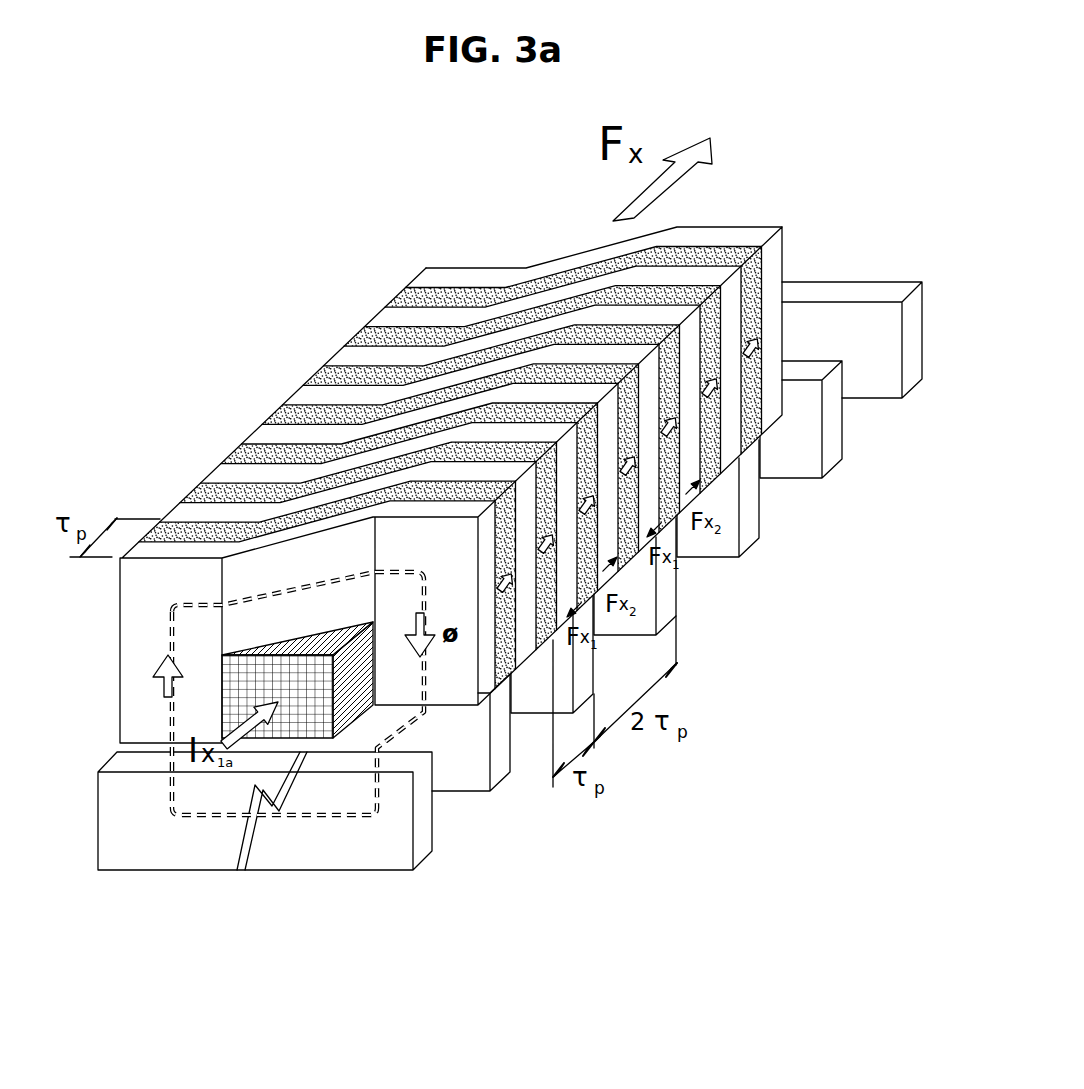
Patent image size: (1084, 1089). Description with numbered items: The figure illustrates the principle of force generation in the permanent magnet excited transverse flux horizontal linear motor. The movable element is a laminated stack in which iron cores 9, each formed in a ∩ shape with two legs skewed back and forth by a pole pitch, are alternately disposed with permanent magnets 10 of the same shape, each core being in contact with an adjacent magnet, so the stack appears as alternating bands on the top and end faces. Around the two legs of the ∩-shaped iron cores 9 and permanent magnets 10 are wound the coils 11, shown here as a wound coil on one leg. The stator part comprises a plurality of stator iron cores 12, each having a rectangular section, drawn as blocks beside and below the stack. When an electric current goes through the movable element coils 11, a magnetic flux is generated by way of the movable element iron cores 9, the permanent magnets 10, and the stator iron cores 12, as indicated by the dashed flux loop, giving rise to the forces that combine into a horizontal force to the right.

The iron cores 9 is at (240, 469).
The permanent magnets 10 is at (343, 372).
The coils 11 is at (350, 707).
The stator iron cores 12 is at (666, 605).